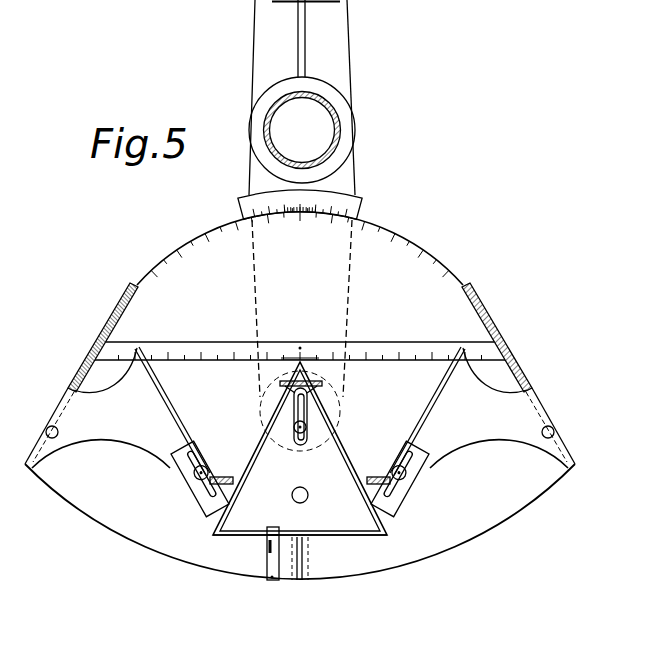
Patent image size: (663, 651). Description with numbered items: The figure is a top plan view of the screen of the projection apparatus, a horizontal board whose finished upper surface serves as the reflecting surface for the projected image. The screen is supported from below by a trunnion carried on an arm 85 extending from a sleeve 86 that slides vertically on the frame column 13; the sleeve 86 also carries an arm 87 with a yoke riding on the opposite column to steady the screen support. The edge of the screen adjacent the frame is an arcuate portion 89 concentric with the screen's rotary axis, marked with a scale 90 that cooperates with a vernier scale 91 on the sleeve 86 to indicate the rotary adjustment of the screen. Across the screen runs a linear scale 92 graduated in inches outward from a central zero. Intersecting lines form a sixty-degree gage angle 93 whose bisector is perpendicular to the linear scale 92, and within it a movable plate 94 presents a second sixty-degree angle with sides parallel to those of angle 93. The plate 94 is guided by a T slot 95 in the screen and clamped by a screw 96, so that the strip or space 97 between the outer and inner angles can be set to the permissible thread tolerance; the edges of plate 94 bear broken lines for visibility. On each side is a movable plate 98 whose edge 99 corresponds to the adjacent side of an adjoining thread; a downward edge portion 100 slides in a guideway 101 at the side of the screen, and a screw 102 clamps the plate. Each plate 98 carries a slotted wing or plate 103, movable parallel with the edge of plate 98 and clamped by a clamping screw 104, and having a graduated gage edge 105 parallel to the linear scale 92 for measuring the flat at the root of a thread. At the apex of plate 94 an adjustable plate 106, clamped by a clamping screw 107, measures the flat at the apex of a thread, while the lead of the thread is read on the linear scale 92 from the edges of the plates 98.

The tubular column 13 is at (340, 126).
The arm 85 is at (350, 304).
The sleeve 86 is at (346, 100).
The arm 87 is at (350, 54).
The arcuate edge portion of the screen 89 is at (436, 258).
The scale 90 is at (434, 280).
The vernier scale 91 is at (362, 195).
The linear scale 92 is at (375, 342).
The angle 93 is at (346, 449).
The plate 94 is at (363, 530).
The T slot 95 is at (300, 581).
The screw 96 is at (309, 496).
The strip or space 97 is at (335, 427).
The movable plate 98 is at (124, 441).
The edge of plate 98 99 is at (437, 401).
The downward edge portion 100 is at (545, 413).
The guideway 101 is at (506, 363).
The screw 102 is at (555, 431).
The adjustable wing or plate 103 is at (421, 470).
The clamping screw 104 is at (414, 481).
The gage or edge 105 is at (383, 477).
The adjustable plate 106 is at (281, 384).
The clamping screw 107 is at (296, 446).